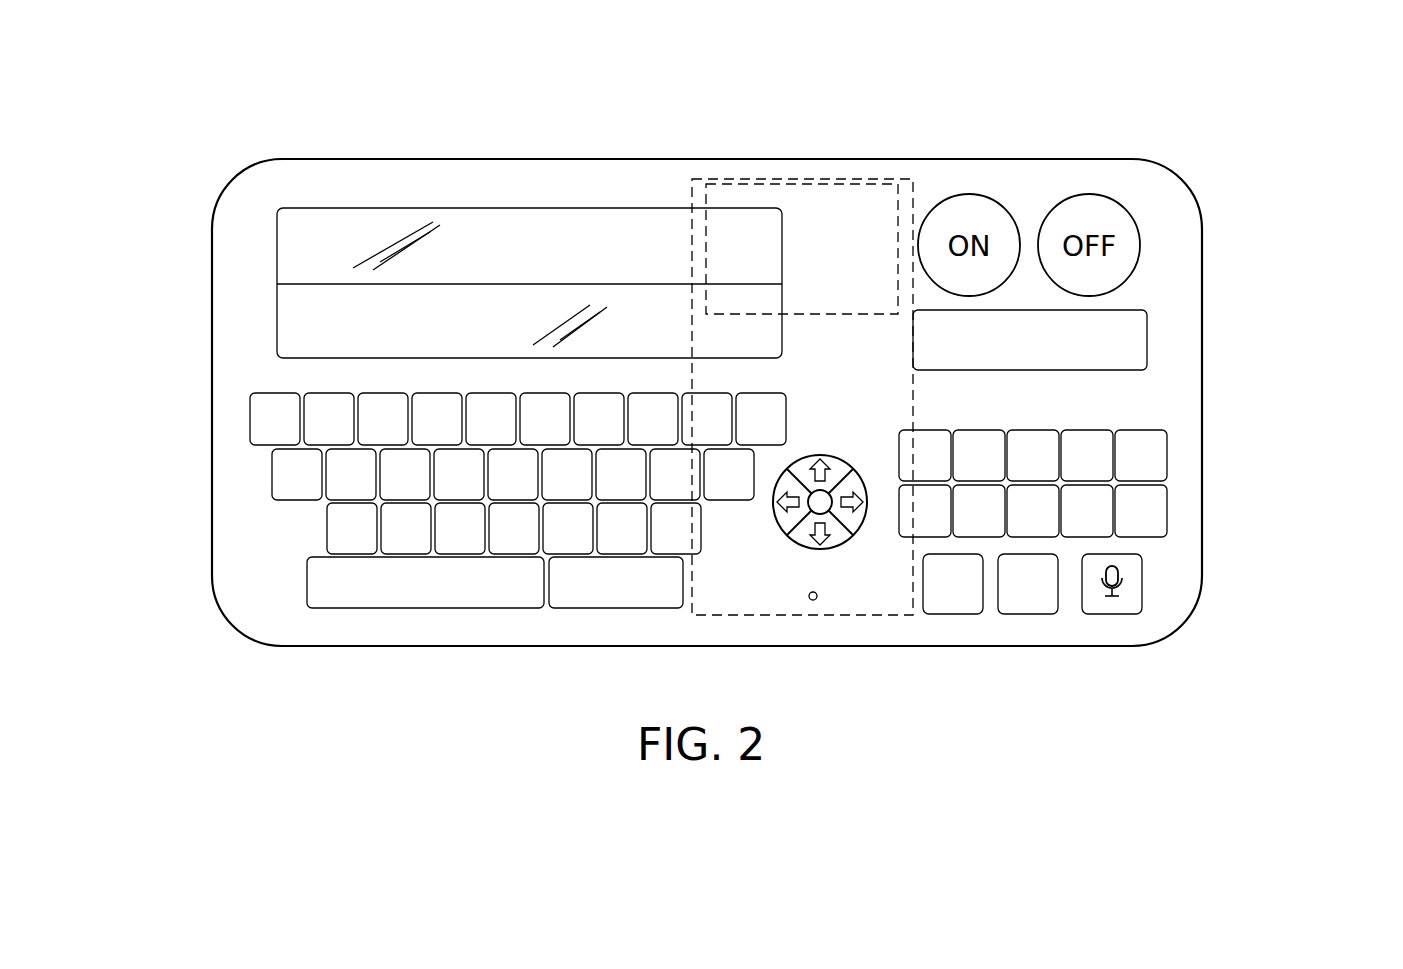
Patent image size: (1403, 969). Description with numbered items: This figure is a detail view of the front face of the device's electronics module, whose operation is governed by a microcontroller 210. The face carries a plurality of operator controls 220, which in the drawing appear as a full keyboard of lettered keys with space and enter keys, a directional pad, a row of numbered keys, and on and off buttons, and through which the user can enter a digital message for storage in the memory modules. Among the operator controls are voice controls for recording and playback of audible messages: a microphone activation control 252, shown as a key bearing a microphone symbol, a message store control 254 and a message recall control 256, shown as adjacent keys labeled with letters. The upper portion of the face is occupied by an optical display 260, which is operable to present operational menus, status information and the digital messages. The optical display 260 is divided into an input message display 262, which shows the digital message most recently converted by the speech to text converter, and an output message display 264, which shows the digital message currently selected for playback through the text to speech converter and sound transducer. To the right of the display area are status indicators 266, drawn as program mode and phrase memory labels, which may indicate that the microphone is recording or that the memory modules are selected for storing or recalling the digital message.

The microcontroller 210 is at (912, 179).
The plurality of operator controls 220 is at (148, 598).
The microphone activation control 252 is at (1110, 614).
The message store control 254 is at (1070, 665).
The message recall control 256 is at (1029, 667).
The optical display 260 is at (720, 355).
The input message display 262 is at (276, 247).
The output message display 264 is at (783, 305).
The status indicator 266 is at (1157, 395).